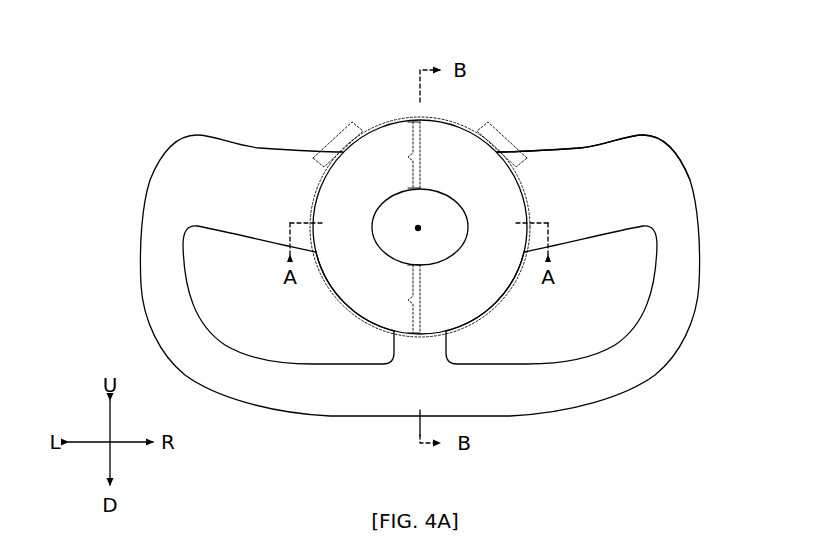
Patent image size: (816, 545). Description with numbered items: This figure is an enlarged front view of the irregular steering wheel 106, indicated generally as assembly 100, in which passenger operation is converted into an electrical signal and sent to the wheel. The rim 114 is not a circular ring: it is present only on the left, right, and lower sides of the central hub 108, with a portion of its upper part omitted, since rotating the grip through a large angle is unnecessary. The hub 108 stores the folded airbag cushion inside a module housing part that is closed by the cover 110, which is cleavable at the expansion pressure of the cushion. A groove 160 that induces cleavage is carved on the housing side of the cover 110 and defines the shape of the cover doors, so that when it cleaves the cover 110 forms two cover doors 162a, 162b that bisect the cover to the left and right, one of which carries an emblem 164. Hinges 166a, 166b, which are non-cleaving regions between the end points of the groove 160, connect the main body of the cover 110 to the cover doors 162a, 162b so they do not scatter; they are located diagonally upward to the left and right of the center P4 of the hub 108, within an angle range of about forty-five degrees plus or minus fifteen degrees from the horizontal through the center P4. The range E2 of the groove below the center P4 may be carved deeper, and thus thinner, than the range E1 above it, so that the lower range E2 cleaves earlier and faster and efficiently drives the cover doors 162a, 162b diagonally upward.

The controller 100 is at (186, 101).
The irregular steering wheel 106 is at (157, 187).
The hub 108 is at (386, 121).
The cover 110 is at (435, 137).
The rim 114 is at (617, 145).
The groove 160 is at (422, 165).
The cover door 162a is at (347, 297).
The cover door 162b is at (493, 297).
The emblem 164 is at (438, 252).
The hinge 166a is at (335, 140).
The hinge 166b is at (505, 140).
The center of the hub P4 is at (420, 228).
The range of the groove on the upper side E1 is at (402, 155).
The range of the groove on the lower side E2 is at (402, 299).